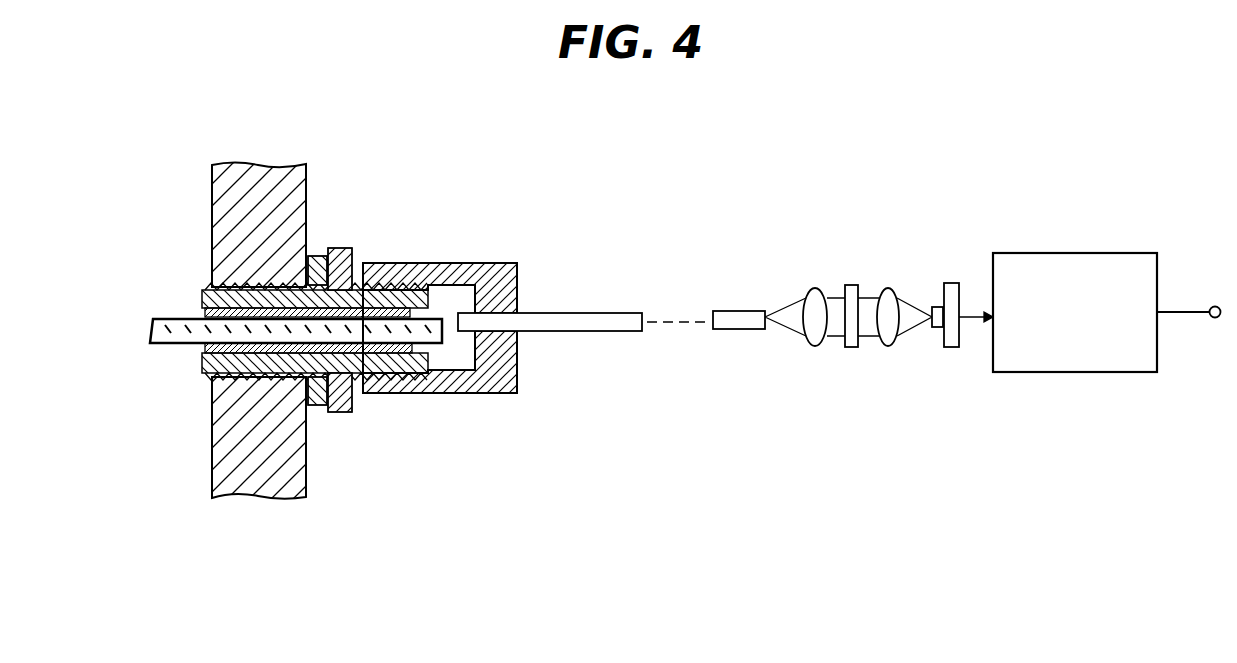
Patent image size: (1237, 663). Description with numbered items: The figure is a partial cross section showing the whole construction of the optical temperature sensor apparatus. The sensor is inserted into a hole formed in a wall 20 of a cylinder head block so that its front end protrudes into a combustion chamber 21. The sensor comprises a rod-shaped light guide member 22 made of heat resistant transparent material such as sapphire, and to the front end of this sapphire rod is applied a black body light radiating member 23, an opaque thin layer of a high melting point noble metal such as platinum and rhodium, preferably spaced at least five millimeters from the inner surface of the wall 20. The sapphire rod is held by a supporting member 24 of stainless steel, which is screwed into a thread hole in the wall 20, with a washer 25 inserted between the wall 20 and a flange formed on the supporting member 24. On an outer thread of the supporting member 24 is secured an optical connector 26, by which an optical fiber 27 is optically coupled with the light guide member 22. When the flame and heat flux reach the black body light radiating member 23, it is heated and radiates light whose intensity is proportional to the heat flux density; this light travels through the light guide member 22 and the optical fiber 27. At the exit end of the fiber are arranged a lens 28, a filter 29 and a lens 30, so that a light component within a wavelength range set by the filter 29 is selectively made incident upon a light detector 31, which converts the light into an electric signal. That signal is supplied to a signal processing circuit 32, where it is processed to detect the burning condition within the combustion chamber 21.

The wall 20 is at (268, 499).
The combustion chamber 21 is at (147, 442).
The rod-shaped light guide member 22 is at (380, 372).
The black body light radiating member 23 is at (157, 319).
The supporting member 24 is at (345, 248).
The washer 25 is at (315, 256).
The optical connector 26 is at (470, 262).
The optical fiber 27 is at (597, 332).
The lens 28 is at (815, 288).
The filter 29 is at (855, 285).
The lens 30 is at (890, 288).
The light detector 31 is at (952, 283).
The signal processing circuit 32 is at (1078, 253).